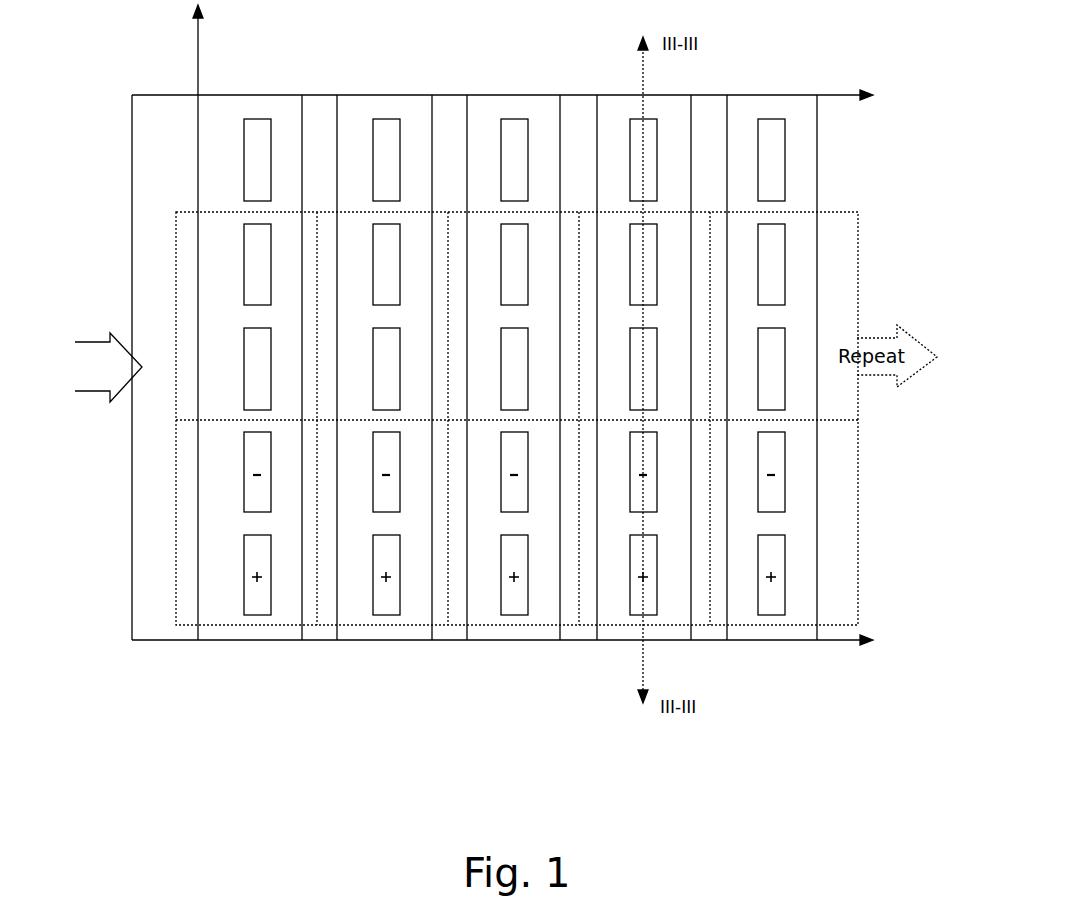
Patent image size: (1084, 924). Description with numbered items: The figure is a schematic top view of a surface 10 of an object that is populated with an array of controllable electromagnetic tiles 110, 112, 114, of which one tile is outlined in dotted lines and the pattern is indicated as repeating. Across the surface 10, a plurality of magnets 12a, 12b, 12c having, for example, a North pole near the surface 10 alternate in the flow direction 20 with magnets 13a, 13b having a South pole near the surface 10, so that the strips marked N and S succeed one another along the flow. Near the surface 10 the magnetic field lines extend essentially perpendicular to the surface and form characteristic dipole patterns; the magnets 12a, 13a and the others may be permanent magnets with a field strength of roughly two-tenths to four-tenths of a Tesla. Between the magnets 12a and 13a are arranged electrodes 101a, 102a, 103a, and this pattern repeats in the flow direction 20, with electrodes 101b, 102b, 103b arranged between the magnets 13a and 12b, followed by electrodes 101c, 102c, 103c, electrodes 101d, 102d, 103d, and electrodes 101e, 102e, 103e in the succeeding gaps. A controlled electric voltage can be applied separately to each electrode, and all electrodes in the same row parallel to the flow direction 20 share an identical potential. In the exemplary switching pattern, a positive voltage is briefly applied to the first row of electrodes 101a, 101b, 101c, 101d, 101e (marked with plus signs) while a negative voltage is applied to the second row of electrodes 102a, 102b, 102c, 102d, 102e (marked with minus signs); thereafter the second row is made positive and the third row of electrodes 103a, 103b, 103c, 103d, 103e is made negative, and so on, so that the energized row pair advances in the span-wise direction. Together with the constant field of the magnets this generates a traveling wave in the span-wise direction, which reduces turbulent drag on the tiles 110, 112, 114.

The surface 10 is at (557, 755).
The magnet 12a is at (164, 100).
The magnet 12b is at (458, 102).
The magnet 12c is at (710, 102).
The magnet 13a is at (322, 102).
The magnet 13b is at (575, 102).
The flow direction 20 is at (95, 342).
The electrode 101a is at (260, 615).
The electrode 101b is at (385, 615).
The electrode 101c is at (510, 615).
The electrode 101d is at (650, 615).
The electrode 101e is at (775, 615).
The electrode 102a is at (243, 497).
The electrode 102b is at (397, 497).
The electrode 102c is at (502, 497).
The electrode 102d is at (652, 500).
The electrode 102e is at (783, 460).
The electrode 103a is at (246, 377).
The electrode 103b is at (398, 348).
The electrode 103c is at (505, 355).
The electrode 103d is at (633, 357).
The electrode 103e is at (800, 332).
The controllable electromagnetic tile 110 is at (182, 615).
The controllable electromagnetic tile 112 is at (327, 620).
The controllable electromagnetic tile 114 is at (457, 622).